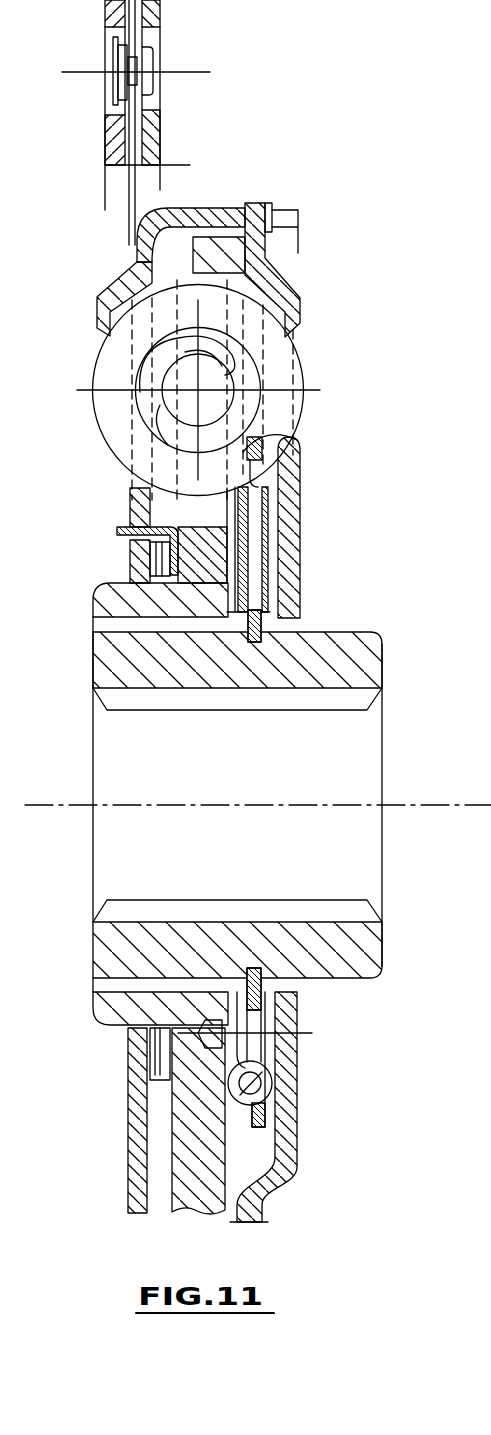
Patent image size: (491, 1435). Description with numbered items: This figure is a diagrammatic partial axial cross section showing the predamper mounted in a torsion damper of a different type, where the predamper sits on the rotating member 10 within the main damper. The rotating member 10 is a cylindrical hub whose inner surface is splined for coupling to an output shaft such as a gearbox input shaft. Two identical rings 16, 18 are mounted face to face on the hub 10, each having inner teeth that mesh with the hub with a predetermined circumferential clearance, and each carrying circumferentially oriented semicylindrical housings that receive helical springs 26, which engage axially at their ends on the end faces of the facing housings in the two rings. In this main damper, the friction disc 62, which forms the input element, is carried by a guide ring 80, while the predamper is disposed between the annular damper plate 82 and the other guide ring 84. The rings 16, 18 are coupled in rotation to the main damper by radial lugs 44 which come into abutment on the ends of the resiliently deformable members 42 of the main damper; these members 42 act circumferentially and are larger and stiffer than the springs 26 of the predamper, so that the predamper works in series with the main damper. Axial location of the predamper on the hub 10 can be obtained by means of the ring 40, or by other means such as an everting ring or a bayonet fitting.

The rotating member 10 is at (88, 642).
The ring 16 is at (270, 543).
The ring 18 is at (272, 563).
The helical spring 26 is at (256, 1080).
The ring 40 is at (255, 645).
The resiliently deformable member 42 is at (107, 362).
The radial lug 44 is at (267, 442).
The friction disc 62 is at (94, 141).
The guide ring 80 is at (137, 252).
The annular damper plate 82 is at (213, 243).
The guide ring 84 is at (302, 483).